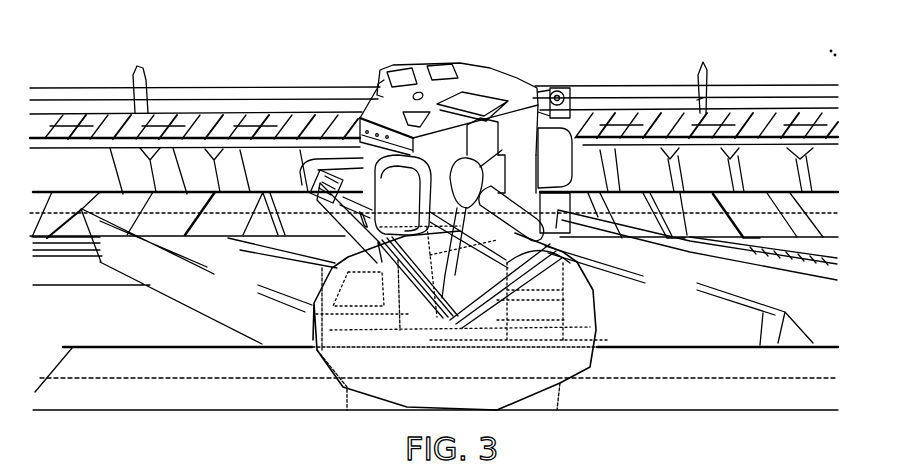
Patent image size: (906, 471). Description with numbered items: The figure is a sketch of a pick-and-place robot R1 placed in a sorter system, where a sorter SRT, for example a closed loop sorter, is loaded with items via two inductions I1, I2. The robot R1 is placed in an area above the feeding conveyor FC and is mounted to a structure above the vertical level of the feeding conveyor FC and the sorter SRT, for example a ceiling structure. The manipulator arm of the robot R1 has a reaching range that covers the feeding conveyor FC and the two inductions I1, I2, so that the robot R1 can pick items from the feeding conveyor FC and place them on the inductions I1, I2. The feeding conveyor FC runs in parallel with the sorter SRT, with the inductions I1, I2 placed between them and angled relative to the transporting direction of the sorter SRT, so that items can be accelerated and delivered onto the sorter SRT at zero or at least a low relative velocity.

The robot R1 is at (472, 83).
The sorter SRT is at (103, 188).
The induction I1 is at (250, 300).
The induction I2 is at (570, 319).
The feeding conveyor FC is at (155, 396).